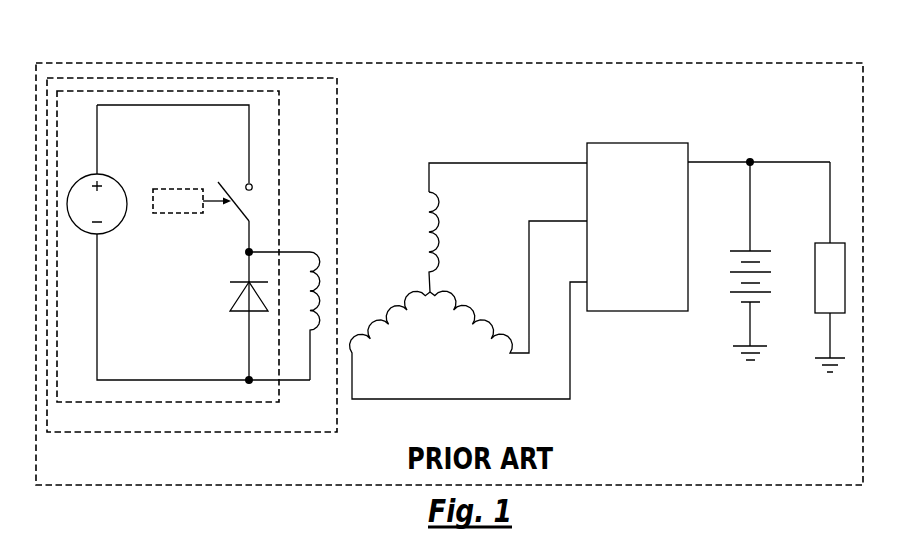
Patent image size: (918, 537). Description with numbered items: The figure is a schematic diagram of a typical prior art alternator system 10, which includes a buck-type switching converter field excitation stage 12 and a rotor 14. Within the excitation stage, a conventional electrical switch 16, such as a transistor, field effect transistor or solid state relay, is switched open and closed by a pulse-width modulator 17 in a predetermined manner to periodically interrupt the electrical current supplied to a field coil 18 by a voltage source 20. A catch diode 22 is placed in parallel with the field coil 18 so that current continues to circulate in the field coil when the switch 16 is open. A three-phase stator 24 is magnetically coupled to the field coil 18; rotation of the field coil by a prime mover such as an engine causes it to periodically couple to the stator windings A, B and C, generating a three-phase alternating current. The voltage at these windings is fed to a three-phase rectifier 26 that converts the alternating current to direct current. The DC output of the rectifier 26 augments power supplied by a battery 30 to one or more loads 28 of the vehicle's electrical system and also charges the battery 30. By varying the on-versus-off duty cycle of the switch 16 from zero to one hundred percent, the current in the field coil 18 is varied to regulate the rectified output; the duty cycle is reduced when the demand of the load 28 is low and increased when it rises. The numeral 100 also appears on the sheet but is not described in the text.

The alternator system 10 is at (762, 40).
The buck-type switching converter field excitation stage 12 is at (187, 402).
The rotor 14 is at (230, 432).
The electrical switch 16 is at (238, 211).
The pulse-width modulator 17 is at (186, 186).
The field coil 18 is at (322, 254).
The voltage source 20 is at (126, 187).
The catch diode 22 is at (233, 301).
The three-phase stator 24 is at (431, 291).
The three-phase rectifier 26 is at (648, 312).
The load 28 is at (822, 316).
The battery 30 is at (764, 250).
The sheet reference 100 is at (742, 536).